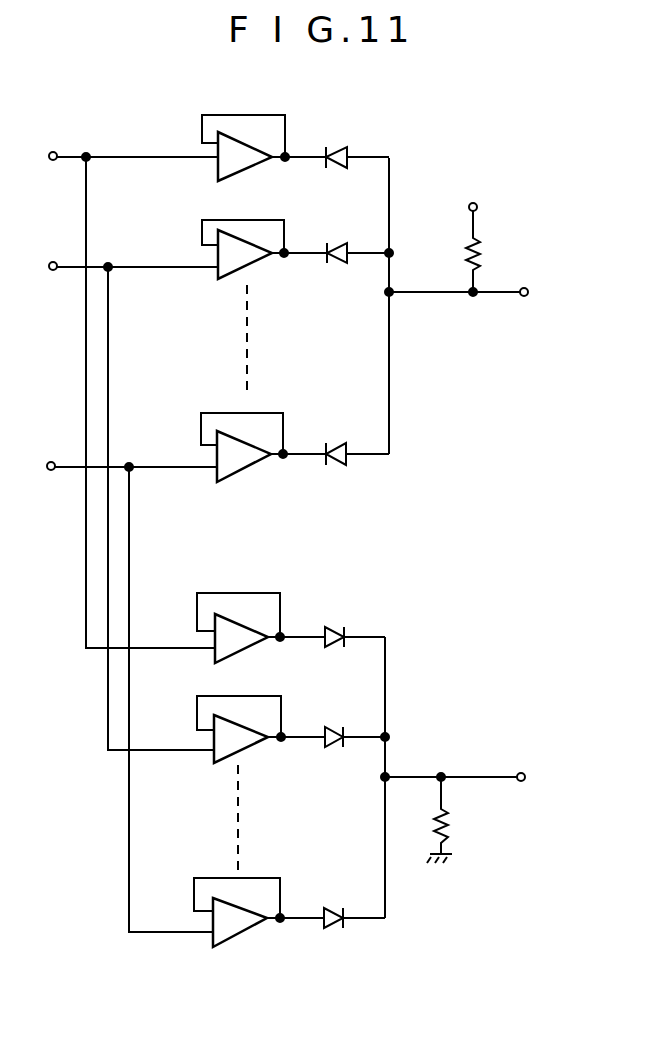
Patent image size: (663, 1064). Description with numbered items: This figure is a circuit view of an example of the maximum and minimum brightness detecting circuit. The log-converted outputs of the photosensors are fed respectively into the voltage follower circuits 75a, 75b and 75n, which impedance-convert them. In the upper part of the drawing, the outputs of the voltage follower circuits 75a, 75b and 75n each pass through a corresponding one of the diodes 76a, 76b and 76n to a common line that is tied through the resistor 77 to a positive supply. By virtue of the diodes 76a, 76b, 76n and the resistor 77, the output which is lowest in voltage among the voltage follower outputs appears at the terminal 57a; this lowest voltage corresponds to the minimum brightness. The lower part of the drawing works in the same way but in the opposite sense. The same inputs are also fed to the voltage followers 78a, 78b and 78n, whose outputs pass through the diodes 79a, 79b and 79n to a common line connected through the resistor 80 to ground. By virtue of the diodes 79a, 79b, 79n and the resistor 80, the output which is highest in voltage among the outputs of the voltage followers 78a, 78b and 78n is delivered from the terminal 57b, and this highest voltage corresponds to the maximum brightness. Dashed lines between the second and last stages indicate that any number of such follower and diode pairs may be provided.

The voltage follower circuit 75a is at (218, 176).
The voltage follower circuit 75b is at (256, 264).
The voltage follower circuit 75n is at (247, 465).
The diode 76a is at (338, 147).
The diode 76b is at (332, 242).
The diode 76n is at (331, 442).
The resistor 77 is at (480, 256).
The terminal 57a is at (482, 293).
The voltage follower 78a is at (240, 620).
The voltage follower 78b is at (242, 745).
The voltage follower 78n is at (239, 930).
The diode 79a is at (330, 628).
The diode 79b is at (330, 729).
The diode 79n is at (325, 909).
The resistor 80 is at (447, 815).
The terminal 57b is at (479, 779).